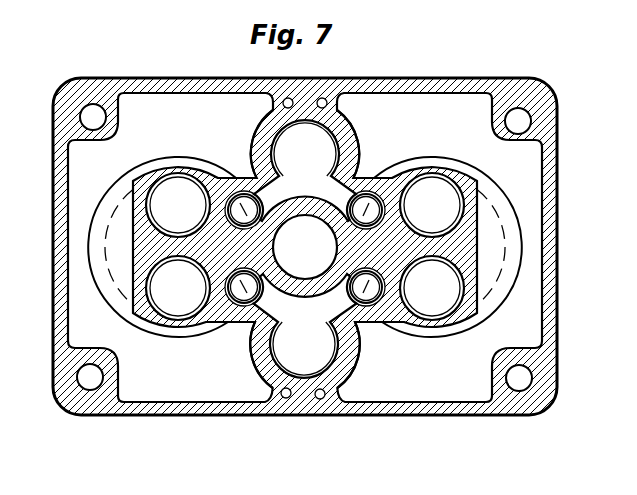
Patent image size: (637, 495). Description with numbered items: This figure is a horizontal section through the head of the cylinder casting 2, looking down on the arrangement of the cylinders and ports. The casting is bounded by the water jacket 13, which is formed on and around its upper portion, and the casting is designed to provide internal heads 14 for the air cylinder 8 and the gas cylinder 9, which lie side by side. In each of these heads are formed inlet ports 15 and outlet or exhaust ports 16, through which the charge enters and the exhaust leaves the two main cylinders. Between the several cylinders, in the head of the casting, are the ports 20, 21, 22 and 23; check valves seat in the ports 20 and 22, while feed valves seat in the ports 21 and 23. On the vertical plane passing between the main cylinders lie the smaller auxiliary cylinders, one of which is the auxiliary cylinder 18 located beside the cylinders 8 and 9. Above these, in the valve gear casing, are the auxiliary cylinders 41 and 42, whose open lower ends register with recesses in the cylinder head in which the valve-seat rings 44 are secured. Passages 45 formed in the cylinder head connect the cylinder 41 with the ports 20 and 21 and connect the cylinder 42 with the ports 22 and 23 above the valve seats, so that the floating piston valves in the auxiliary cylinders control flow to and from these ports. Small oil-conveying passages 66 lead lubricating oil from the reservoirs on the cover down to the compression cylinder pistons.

The cylinder casting 2 is at (549, 374).
The air cylinder 8 is at (110, 198).
The gas cylinder 9 is at (499, 241).
The water jacket 13 is at (182, 387).
The internal heads 14 is at (128, 251).
The inlet ports 15 is at (305, 205).
The outlet or exhaust ports 16 is at (432, 288).
The auxiliary cylinder 18 is at (178, 288).
The port 20 is at (357, 208).
The port 21 is at (256, 207).
The port 22 is at (255, 291).
The port 23 is at (355, 291).
The auxiliary cylinder 41 is at (305, 149).
The auxiliary cylinder 42 is at (304, 348).
The valve-seat rings 44 is at (277, 141).
The passages 45 is at (332, 187).
The oil-conveying passages 66 is at (281, 104).